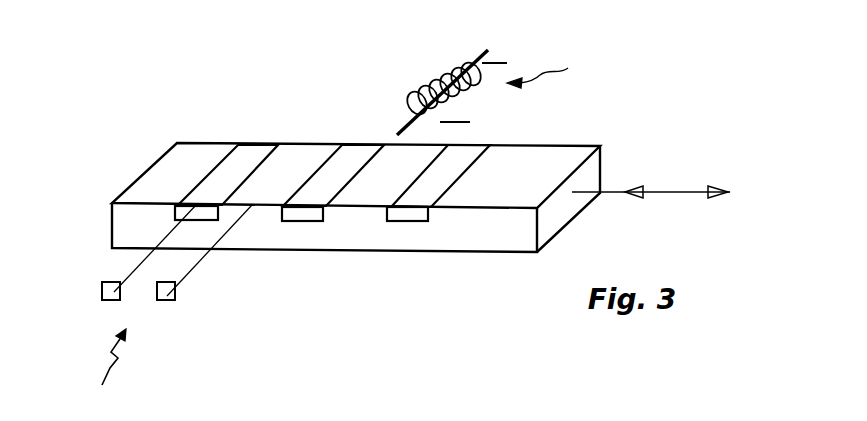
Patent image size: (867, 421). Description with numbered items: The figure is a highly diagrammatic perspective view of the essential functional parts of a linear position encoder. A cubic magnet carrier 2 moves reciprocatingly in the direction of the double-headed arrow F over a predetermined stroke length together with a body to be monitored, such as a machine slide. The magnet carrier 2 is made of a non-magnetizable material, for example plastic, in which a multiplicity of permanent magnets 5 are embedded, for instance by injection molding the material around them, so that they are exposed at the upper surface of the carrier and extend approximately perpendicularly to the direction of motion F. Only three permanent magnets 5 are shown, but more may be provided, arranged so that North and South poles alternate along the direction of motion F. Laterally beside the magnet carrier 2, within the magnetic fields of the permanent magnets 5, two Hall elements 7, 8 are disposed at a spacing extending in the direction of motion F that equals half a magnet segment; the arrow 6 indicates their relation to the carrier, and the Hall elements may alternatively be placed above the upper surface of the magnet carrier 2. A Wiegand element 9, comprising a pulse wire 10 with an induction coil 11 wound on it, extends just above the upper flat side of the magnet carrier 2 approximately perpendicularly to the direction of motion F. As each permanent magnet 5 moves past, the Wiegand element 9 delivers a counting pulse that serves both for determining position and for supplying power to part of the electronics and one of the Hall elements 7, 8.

The magnet carrier 2 is at (482, 245).
The permanent magnets 5 is at (216, 162).
The direction of movement 6 is at (106, 366).
The Hall element 7 is at (101, 288).
The Hall element 8 is at (175, 289).
The Wiegand element 9 is at (549, 70).
The pulse wire 10 is at (483, 55).
The induction coil 11 is at (428, 82).
The direction of motion F is at (671, 192).